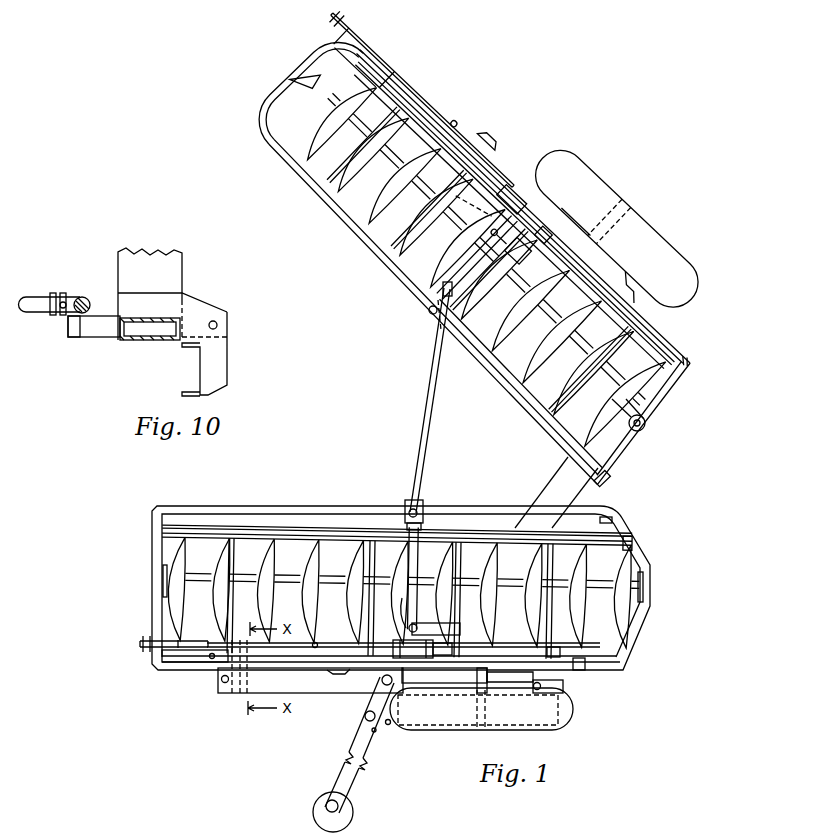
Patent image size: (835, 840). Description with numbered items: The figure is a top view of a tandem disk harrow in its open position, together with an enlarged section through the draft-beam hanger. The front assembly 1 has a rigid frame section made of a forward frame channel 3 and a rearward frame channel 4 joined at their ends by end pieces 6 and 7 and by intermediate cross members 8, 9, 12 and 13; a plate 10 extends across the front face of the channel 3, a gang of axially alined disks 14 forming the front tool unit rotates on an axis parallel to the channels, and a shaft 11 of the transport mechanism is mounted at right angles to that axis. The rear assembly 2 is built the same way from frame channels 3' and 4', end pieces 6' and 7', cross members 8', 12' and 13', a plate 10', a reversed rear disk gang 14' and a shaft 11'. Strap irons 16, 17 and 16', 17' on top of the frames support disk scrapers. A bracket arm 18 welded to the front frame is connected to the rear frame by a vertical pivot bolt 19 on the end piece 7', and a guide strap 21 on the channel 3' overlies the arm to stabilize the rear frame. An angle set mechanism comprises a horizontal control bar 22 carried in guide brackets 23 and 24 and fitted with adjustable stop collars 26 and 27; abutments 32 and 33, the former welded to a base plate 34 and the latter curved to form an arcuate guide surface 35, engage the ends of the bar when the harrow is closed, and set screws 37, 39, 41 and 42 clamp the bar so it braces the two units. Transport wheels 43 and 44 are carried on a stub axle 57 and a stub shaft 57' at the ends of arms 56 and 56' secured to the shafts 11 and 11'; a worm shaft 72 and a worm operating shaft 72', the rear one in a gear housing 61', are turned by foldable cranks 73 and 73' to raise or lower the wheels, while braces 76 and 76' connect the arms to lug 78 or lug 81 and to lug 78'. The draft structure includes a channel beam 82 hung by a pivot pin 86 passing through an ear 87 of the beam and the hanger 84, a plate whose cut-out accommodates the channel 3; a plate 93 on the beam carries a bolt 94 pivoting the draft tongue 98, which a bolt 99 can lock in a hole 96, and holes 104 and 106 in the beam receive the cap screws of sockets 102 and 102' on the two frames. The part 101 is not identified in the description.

In FIG. 1, the front assembly 1 is at (123, 557).
In FIG. 1, the rear assembly 2 is at (241, 109).
In FIG. 1, the forward frame channel 3 is at (391, 649).
In FIG. 10, the forward frame channel 3 is at (150, 319).
In FIG. 1, the forward frame channel 3' is at (436, 311).
In FIG. 1, the rearward frame channel 4 is at (397, 517).
In FIG. 1, the rearward frame channel 4' is at (520, 213).
In FIG. 1, the end piece 6 is at (650, 602).
In FIG. 1, the end piece 6' is at (290, 78).
In FIG. 1, the end piece 7 is at (145, 593).
In FIG. 1, the end piece 7' is at (641, 421).
In FIG. 1, the cross member 8 is at (542, 600).
In FIG. 1, the cross member 8' is at (361, 155).
In FIG. 1, the cross member 9 is at (458, 565).
In FIG. 1, the plate 10 is at (377, 662).
In FIG. 10, the plate 10 is at (110, 343).
In FIG. 1, the plate 10' is at (509, 220).
In FIG. 1, the shaft 11 is at (421, 578).
In FIG. 1, the shaft 11' is at (477, 259).
In FIG. 1, the cross member 12 is at (367, 592).
In FIG. 1, the cross member 12' is at (518, 311).
In FIG. 1, the cross member 13 is at (240, 595).
In FIG. 10, the cross member 13 is at (163, 294).
In FIG. 1, the cross member 13' is at (577, 369).
In FIG. 1, the gang of disks 14 is at (412, 592).
In FIG. 1, the gang of disks 14' is at (487, 249).
In FIG. 1, the strap iron 16 is at (597, 523).
In FIG. 1, the strap iron 16' is at (696, 374).
In FIG. 1, the strap iron 17 is at (587, 595).
In FIG. 1, the strap iron 17' is at (625, 404).
In FIG. 1, the bracket arm 18 is at (563, 488).
In FIG. 1, the vertical pivot bolt 19 is at (646, 425).
In FIG. 1, the guide strap 21 is at (543, 430).
In FIG. 1, the control bar 22 is at (438, 427).
In FIG. 1, the guide bracket 23 is at (424, 512).
In FIG. 1, the guide bracket 24 is at (425, 324).
In FIG. 1, the stop collar 26 is at (405, 512).
In FIG. 1, the stop collar 27 is at (440, 290).
In FIG. 1, the forward abutment 32 is at (417, 625).
In FIG. 1, the rearward abutment 33 is at (520, 251).
In FIG. 1, the base plate 34 is at (458, 630).
In FIG. 1, the arcuate guide surface 35 is at (474, 206).
In FIG. 1, the set screw 37 is at (395, 602).
In FIG. 1, the set screw 39 is at (492, 234).
In FIG. 1, the set screw 41 is at (410, 500).
In FIG. 1, the set screw 42 is at (429, 312).
In FIG. 1, the transport wheel 43 is at (536, 730).
In FIG. 1, the transport wheel 44 is at (663, 256).
In FIG. 1, the arm 56 is at (478, 704).
In FIG. 1, the arm 56' is at (578, 212).
In FIG. 1, the stub axle 57 is at (469, 719).
In FIG. 1, the stub shaft 57' is at (618, 223).
In FIG. 1, the gear housing 61' is at (525, 207).
In FIG. 1, the shaft 72 is at (318, 635).
In FIG. 10, the shaft 72 is at (84, 294).
In FIG. 1, the worm operating shaft 72' is at (467, 114).
In FIG. 1, the crank 73 is at (174, 633).
In FIG. 10, the crank 73 is at (50, 296).
In FIG. 1, the crank 73' is at (423, 99).
In FIG. 1, the brace 76 is at (467, 689).
In FIG. 1, the brace 76' is at (640, 282).
In FIG. 1, the lug 78 is at (330, 679).
In FIG. 1, the lug 78' is at (501, 133).
In FIG. 1, the lug 81 is at (579, 658).
In FIG. 1, the beam 82 is at (300, 688).
In FIG. 10, the hanger 84 is at (200, 305).
In FIG. 10, the pivot pin 86 is at (218, 325).
In FIG. 10, the ear 87 is at (228, 372).
In FIG. 1, the plate 93 is at (391, 725).
In FIG. 1, the bolt 94 is at (382, 680).
In FIG. 1, the hole 96 is at (374, 733).
In FIG. 1, the draft tongue 98 is at (352, 749).
In FIG. 1, the bolt 99 is at (364, 716).
In FIG. 1, the wheel 101 is at (352, 812).
In FIG. 1, the socket 102 is at (195, 673).
In FIG. 10, the socket 102 is at (77, 338).
In FIG. 1, the socket 102' is at (386, 58).
In FIG. 1, the hole 104 is at (225, 684).
In FIG. 1, the hole 106 is at (538, 693).